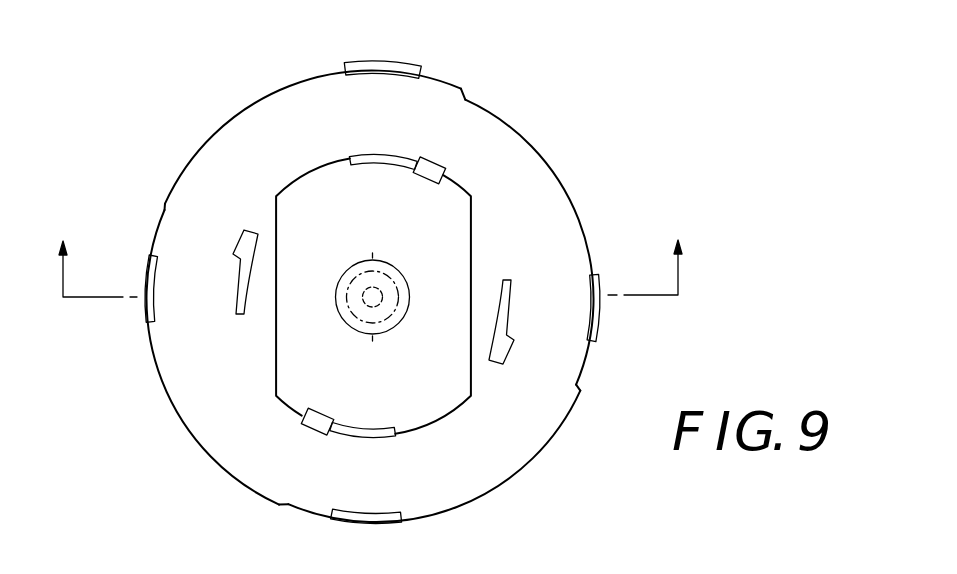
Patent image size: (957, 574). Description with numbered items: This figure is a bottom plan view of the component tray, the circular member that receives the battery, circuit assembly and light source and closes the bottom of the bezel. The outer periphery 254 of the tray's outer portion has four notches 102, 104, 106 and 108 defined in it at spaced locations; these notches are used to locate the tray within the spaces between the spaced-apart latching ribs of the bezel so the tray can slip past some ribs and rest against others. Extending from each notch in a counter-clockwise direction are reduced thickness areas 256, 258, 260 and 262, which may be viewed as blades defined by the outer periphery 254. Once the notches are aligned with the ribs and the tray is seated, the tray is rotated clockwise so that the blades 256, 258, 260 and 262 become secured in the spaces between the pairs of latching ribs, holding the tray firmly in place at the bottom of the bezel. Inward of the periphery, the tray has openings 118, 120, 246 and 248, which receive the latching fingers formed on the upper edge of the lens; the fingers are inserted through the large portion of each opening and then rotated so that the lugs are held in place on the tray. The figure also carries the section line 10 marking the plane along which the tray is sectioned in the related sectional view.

The section line 10- 10 is at (369, 251).
The notch 102 is at (303, 507).
The notch 104 is at (156, 218).
The notch 106 is at (430, 74).
The notch 108 is at (588, 362).
The opening 118 is at (417, 167).
The opening 120 is at (327, 423).
The opening 246 is at (500, 350).
The opening 248 is at (240, 243).
The outer periphery 254 is at (546, 133).
The reduced thickness area 256 is at (360, 524).
The reduced thickness area 258 is at (146, 275).
The reduced thickness area 260 is at (377, 51).
The reduced thickness area 262 is at (599, 290).